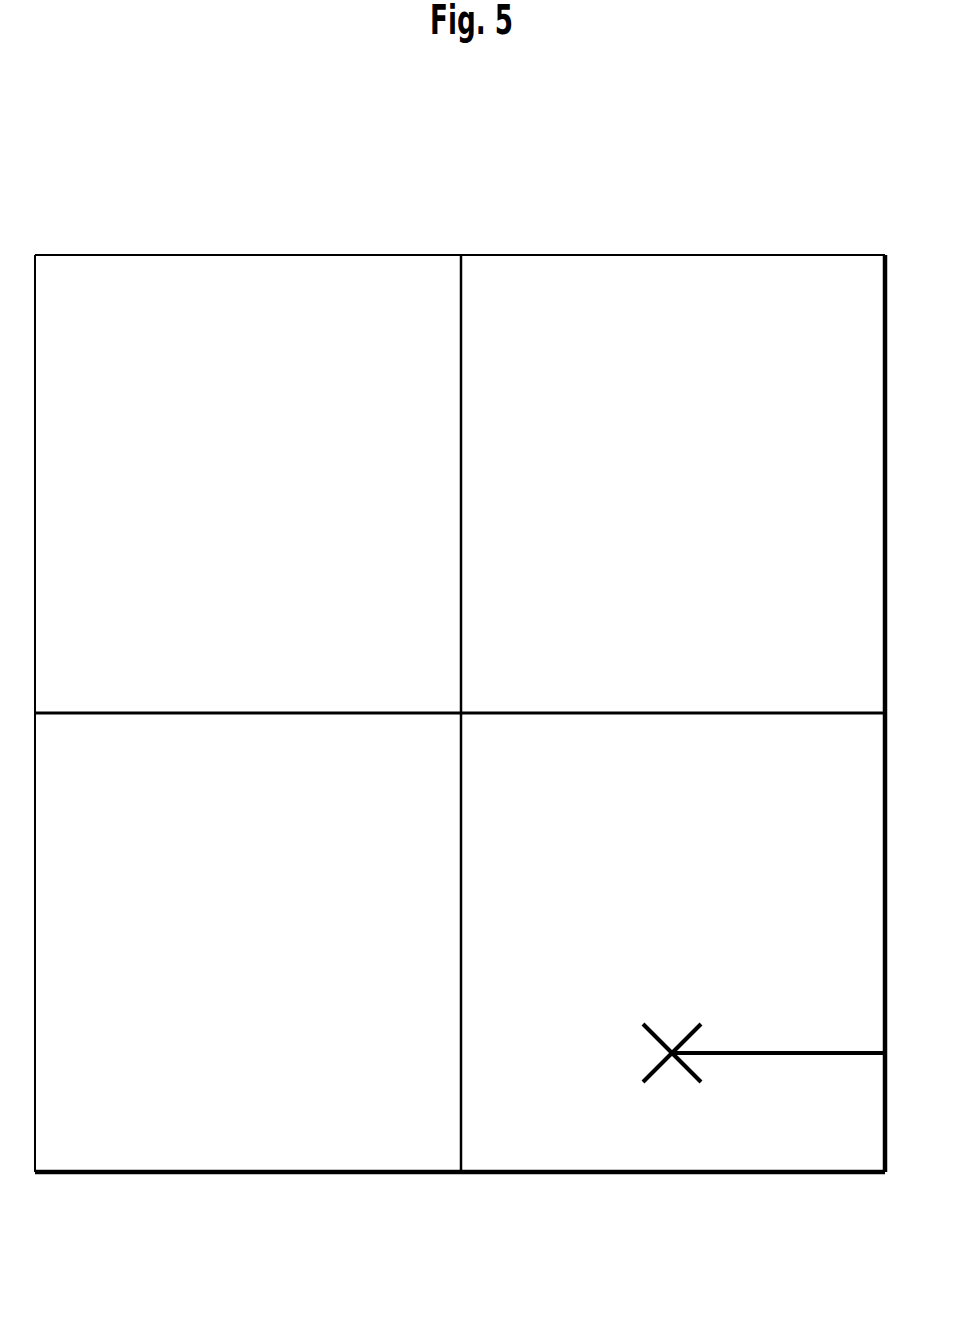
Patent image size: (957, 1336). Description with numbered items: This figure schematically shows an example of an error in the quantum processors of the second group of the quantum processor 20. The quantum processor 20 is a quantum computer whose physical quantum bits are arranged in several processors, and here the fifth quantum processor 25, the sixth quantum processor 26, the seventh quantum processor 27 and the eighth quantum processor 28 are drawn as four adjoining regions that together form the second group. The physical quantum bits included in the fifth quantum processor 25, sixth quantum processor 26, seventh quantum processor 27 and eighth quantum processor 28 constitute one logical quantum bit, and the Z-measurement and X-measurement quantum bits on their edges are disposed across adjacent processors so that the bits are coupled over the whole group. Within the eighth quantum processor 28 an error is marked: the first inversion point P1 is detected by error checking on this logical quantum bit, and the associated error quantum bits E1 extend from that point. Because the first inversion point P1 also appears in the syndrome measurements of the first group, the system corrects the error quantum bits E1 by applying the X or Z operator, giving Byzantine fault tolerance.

The quantum processor 20 is at (448, 188).
The fifth quantum processor 25 is at (127, 340).
The sixth quantum processor 26 is at (545, 340).
The seventh quantum processor 27 is at (127, 800).
The eighth quantum processor 28 is at (547, 800).
The first inversion point P1 is at (668, 1000).
The error quantum bits E1 is at (810, 1050).